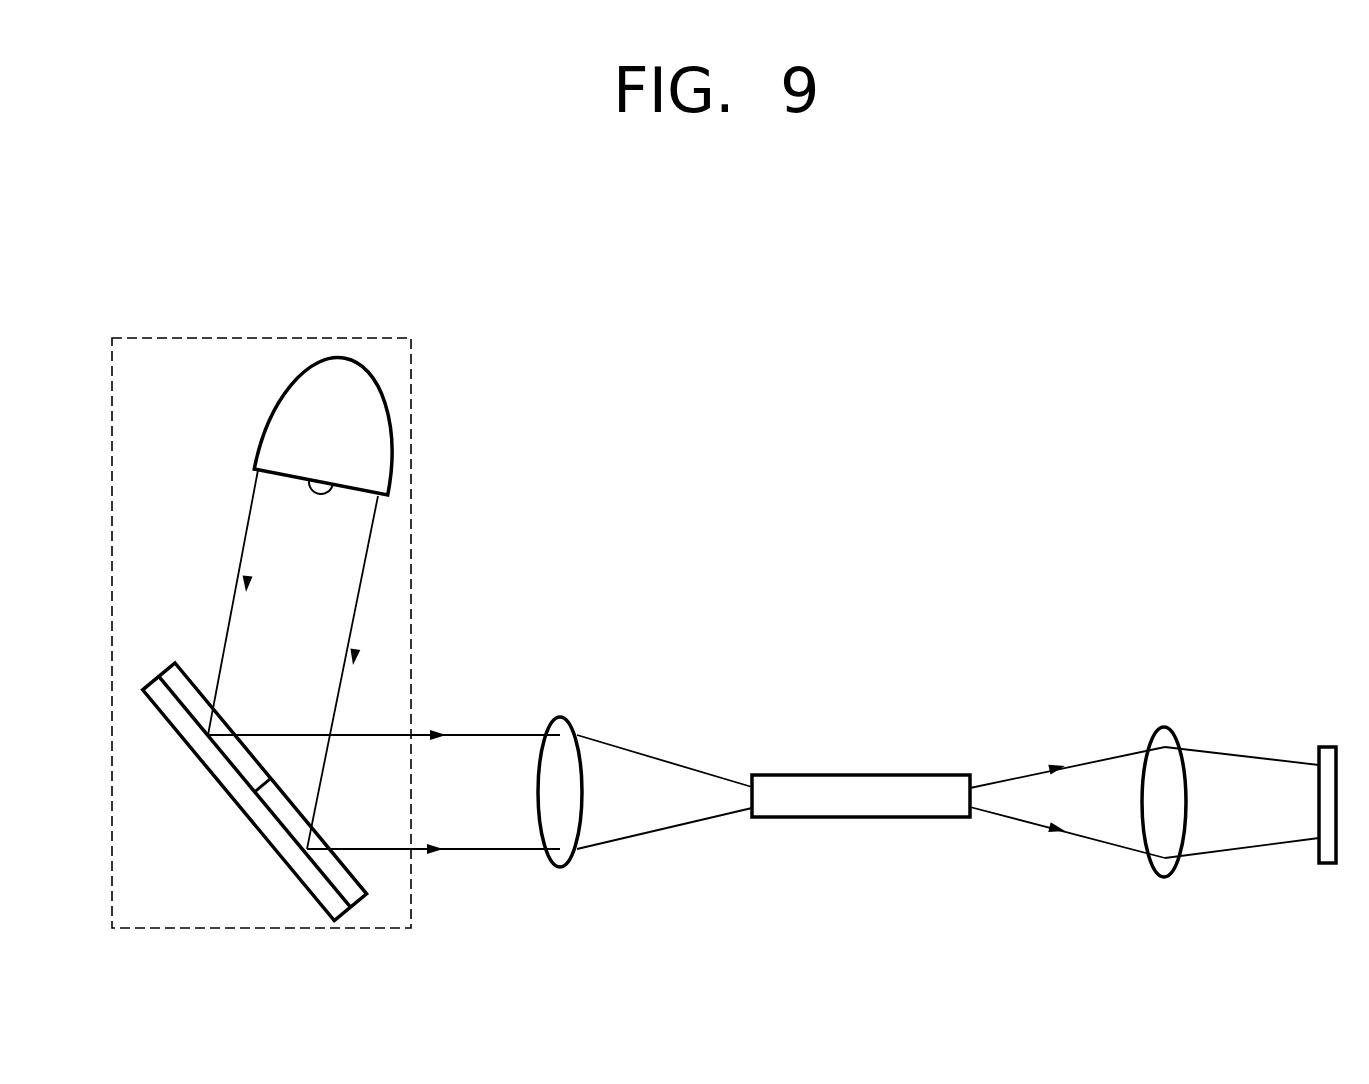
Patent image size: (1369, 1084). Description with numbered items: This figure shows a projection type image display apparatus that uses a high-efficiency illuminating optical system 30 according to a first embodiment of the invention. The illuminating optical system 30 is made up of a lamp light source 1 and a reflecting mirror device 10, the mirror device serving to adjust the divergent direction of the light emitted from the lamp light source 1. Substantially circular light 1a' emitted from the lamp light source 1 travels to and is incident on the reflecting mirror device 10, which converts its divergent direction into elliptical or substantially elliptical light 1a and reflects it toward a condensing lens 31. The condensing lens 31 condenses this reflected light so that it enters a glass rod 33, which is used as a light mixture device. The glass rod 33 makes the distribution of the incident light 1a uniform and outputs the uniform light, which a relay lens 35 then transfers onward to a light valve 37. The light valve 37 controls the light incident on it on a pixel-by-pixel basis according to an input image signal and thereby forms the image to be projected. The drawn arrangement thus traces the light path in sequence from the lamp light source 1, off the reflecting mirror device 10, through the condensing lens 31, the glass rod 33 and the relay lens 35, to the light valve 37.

The lamp light source 1 is at (247, 375).
The elliptical light 1a is at (384, 734).
The substantially circular light 1a' is at (249, 651).
The reflecting mirror device 10 is at (158, 795).
The illuminating optical system 30 is at (347, 337).
The condensing lens 31 is at (562, 717).
The glass rod 33 is at (858, 775).
The relay lens 35 is at (1163, 735).
The light valve 37 is at (1328, 757).